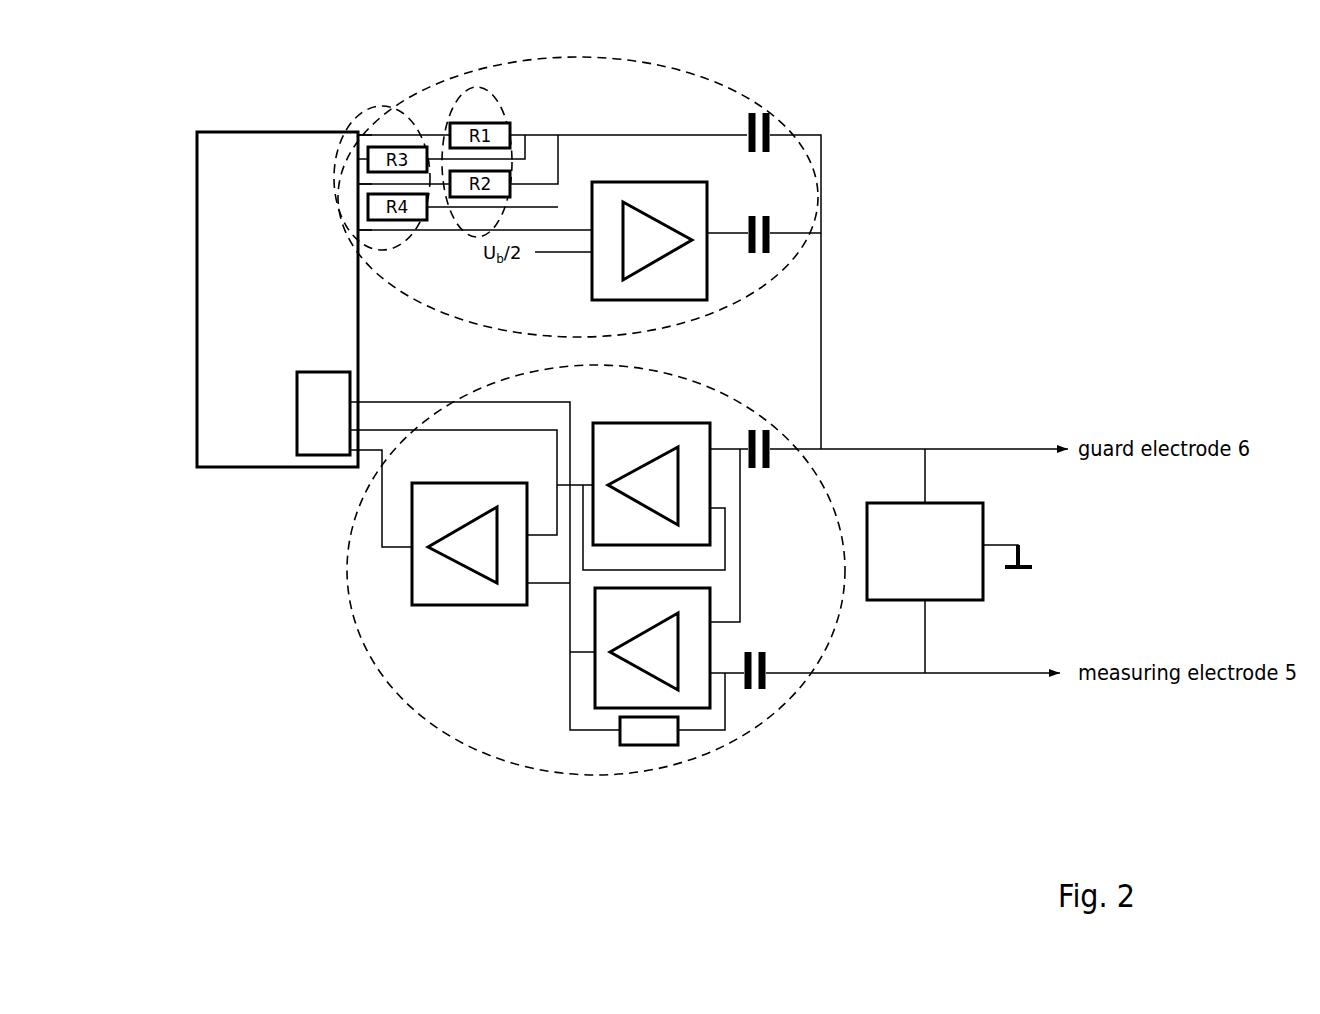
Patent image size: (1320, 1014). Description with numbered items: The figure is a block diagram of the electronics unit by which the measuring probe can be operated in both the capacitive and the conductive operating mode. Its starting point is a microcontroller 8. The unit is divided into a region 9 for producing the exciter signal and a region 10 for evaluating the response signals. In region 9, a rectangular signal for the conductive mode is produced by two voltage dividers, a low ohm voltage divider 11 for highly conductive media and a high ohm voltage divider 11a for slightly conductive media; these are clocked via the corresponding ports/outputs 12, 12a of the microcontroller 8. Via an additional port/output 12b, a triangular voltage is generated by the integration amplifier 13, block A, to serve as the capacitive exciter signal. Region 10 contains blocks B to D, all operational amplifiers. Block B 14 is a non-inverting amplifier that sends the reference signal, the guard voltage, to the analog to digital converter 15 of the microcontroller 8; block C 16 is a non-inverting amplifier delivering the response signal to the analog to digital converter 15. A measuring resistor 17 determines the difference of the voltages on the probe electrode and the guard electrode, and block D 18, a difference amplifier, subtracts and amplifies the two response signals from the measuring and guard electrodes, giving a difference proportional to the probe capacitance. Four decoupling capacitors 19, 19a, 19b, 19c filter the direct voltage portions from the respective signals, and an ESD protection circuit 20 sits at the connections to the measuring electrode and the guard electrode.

The microcontroller 8 is at (194, 150).
The region for producing the exciter signal 9 is at (716, 77).
The region for evaluation of the response signals 10 is at (370, 665).
The low ohm voltage divider 11 is at (483, 90).
The high ohm voltage divider 11a is at (410, 110).
The port/output of the microcontroller 12 is at (352, 148).
The port/output of the microcontroller 12a is at (352, 194).
The additional port/output of the microcontroller 12b is at (352, 232).
The integration amplifier 13 is at (665, 191).
The block B 14 is at (692, 532).
The analog to digital converter 15 is at (294, 402).
The block C 16 is at (619, 692).
The measuring resistor 17 is at (616, 734).
The block D 18 is at (409, 585).
The decoupling capacitor 19 is at (784, 145).
The decoupling capacitor 19a is at (766, 255).
The decoupling capacitor 19b is at (781, 450).
The decoupling capacitor 19c is at (772, 696).
The ESD protection circuit 20 is at (960, 525).